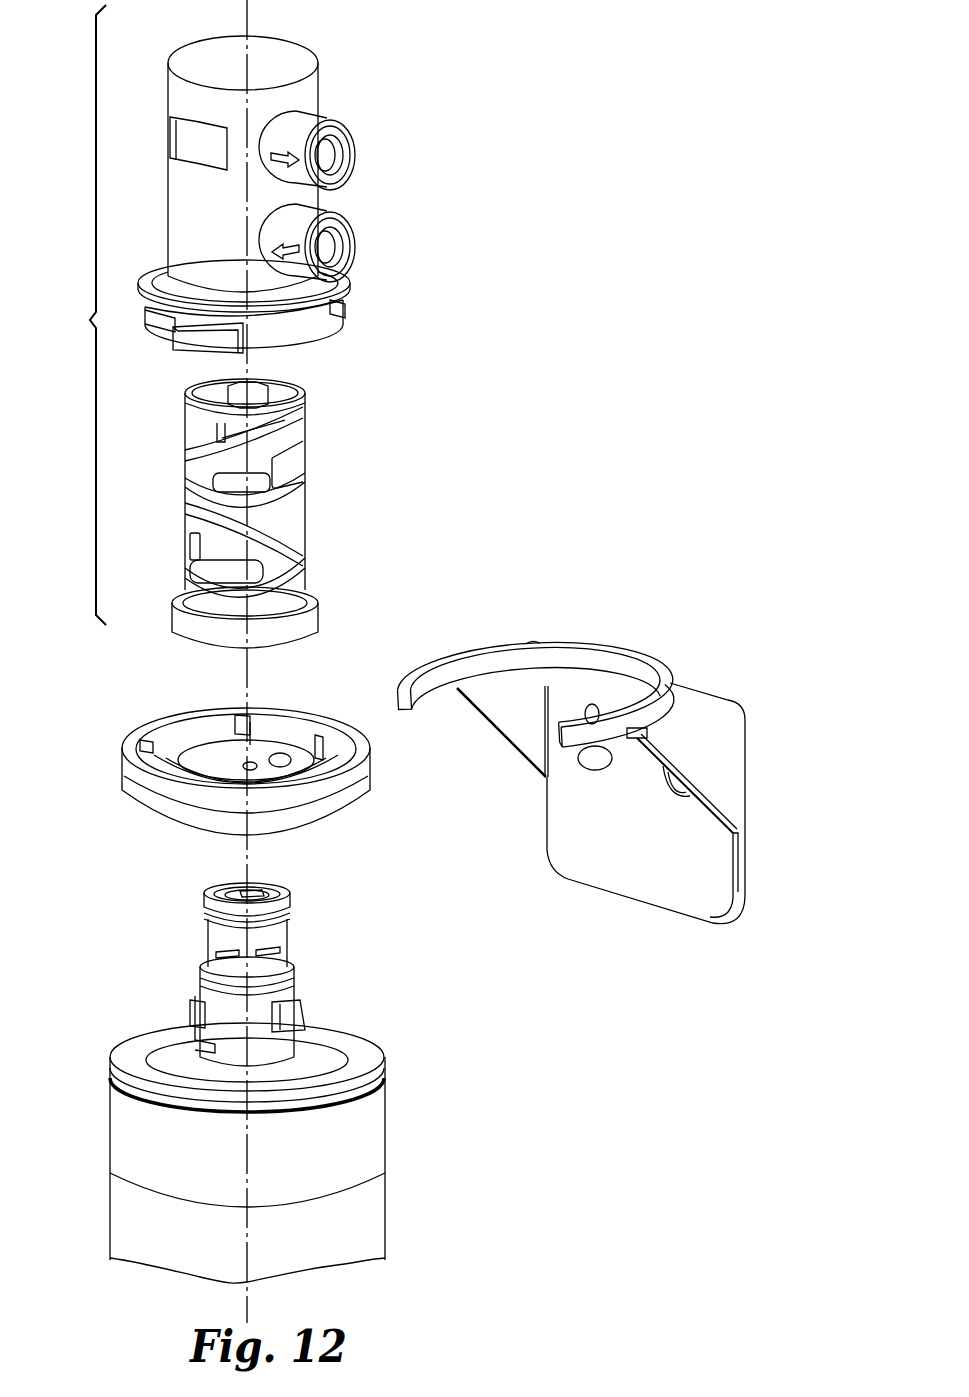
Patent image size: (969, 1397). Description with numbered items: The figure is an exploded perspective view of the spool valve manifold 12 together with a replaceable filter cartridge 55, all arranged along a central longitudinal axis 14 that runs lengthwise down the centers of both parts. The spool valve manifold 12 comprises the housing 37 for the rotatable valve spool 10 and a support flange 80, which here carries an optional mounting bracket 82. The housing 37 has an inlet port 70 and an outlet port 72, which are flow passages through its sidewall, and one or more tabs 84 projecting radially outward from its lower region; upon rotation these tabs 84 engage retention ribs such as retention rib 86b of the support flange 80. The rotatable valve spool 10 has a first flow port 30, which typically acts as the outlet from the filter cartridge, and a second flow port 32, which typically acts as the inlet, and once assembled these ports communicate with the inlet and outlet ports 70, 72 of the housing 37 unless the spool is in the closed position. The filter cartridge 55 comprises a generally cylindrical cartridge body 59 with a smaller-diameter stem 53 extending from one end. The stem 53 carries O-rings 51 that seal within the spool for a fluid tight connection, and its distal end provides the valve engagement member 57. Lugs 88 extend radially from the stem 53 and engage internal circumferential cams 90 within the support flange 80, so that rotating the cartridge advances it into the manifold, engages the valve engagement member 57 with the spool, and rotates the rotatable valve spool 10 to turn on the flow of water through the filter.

The rotatable valve spool 10 is at (251, 513).
The spool valve manifold 12 is at (80, 315).
The central longitudinal axis 14 is at (250, 15).
The first flow port 30 is at (191, 427).
The second flow port 32 is at (190, 548).
The housing 37 is at (196, 58).
The O-rings 51 is at (212, 913).
The stem 53 is at (280, 950).
The filter cartridge 55 is at (372, 1135).
The valve engagement member 57 is at (262, 898).
The cartridge body 59 is at (372, 1223).
The inlet port 70 is at (346, 240).
The outlet port 72 is at (346, 148).
The support flange 80 is at (268, 765).
The mounting bracket 82 is at (668, 888).
The tabs 84 is at (347, 313).
The retention rib 86b is at (146, 730).
The lugs 88 is at (200, 1013).
The internal circumferential cams 90 is at (287, 765).